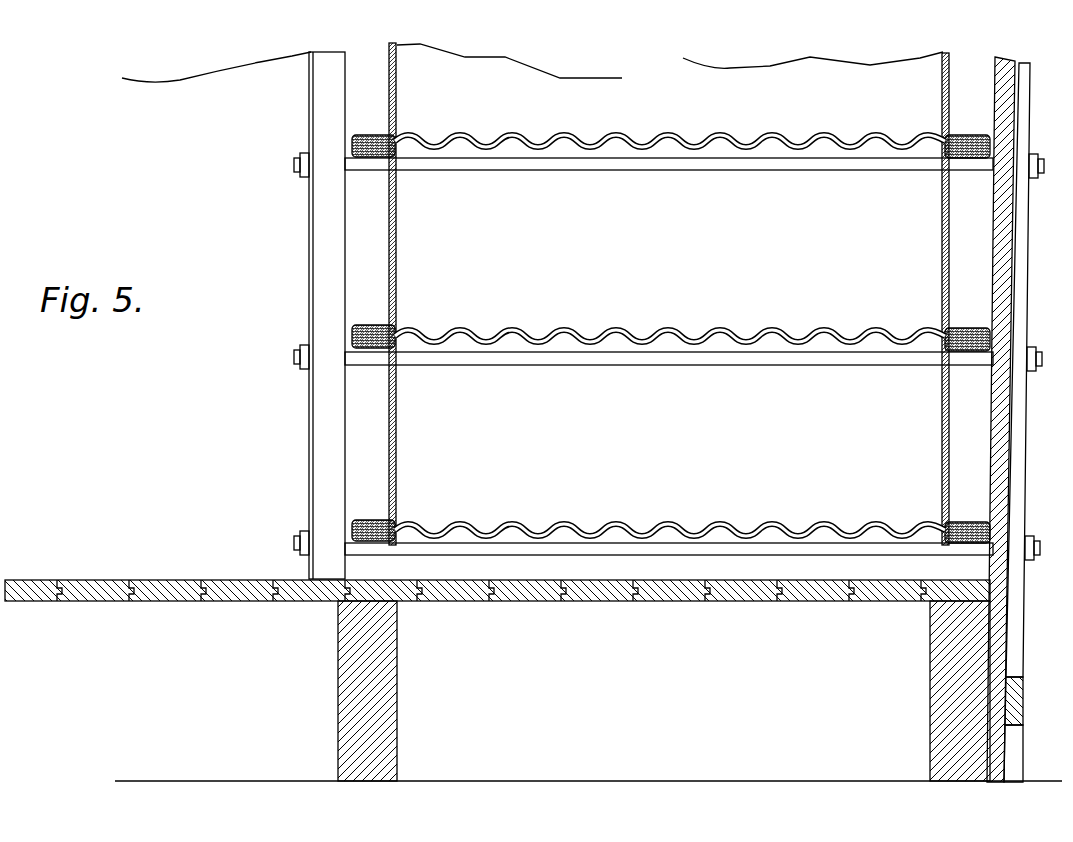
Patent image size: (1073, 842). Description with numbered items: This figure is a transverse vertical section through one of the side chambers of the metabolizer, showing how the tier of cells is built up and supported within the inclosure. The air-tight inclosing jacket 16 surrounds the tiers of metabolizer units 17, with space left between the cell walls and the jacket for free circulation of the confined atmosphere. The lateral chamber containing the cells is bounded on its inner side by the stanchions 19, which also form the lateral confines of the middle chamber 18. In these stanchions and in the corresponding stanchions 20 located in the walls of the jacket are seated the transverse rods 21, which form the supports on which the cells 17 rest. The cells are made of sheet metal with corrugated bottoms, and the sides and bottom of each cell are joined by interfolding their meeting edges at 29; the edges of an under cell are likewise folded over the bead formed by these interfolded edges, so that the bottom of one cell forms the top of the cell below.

The inclosing jacket 16 is at (778, 601).
The metabolizer units 17 is at (390, 243).
The middle chamber 18 is at (205, 104).
The stanchions 19 is at (308, 317).
The stanchions 20 is at (1016, 312).
The transverse rods 21 is at (558, 165).
The interfolded edges 29 is at (370, 135).